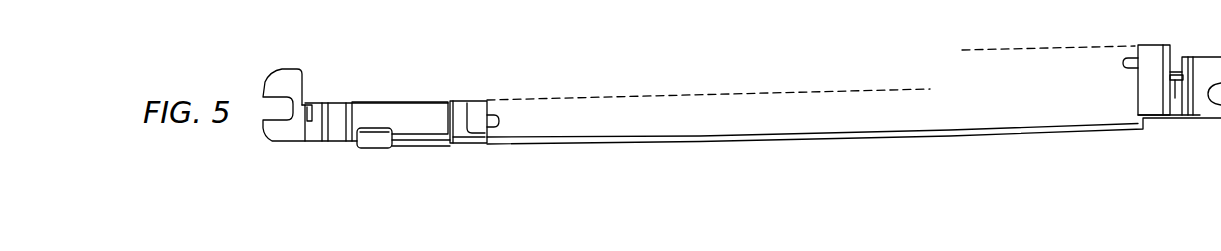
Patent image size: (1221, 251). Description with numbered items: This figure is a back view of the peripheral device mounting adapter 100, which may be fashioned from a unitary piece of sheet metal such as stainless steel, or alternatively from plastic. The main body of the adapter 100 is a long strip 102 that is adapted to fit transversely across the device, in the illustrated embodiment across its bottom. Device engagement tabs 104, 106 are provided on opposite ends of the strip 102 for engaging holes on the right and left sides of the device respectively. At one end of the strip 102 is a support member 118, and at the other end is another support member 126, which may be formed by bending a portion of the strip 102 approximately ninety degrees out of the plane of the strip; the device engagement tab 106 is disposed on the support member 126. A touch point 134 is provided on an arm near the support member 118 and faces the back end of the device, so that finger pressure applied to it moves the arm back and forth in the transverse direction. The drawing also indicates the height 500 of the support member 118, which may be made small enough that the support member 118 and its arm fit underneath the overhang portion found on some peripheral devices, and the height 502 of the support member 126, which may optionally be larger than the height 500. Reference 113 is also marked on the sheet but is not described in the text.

The peripheral device mounting adapter 100 is at (833, 51).
The strip 102 is at (667, 136).
The device engagement tab 104 is at (499, 121).
The device engagement tab 106 is at (1123, 63).
The slot 113 is at (393, 60).
The support member 118 is at (399, 108).
The support member 126 is at (1137, 90).
The touch point 134 is at (478, 106).
The height of support member 500 is at (922, 92).
The height of support member 502 is at (983, 52).